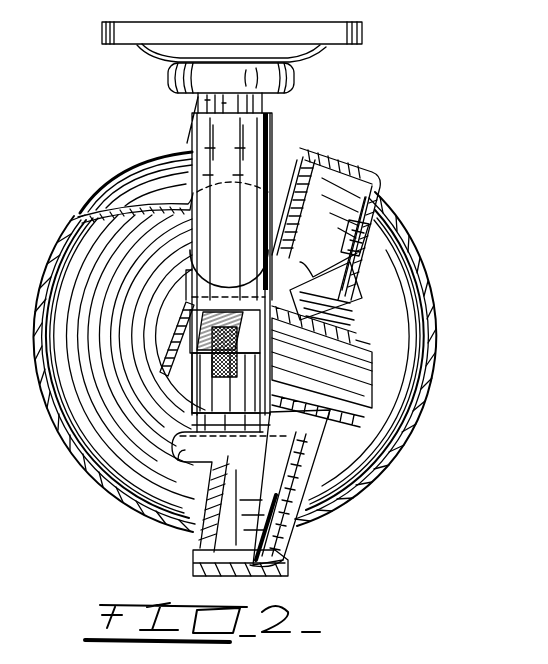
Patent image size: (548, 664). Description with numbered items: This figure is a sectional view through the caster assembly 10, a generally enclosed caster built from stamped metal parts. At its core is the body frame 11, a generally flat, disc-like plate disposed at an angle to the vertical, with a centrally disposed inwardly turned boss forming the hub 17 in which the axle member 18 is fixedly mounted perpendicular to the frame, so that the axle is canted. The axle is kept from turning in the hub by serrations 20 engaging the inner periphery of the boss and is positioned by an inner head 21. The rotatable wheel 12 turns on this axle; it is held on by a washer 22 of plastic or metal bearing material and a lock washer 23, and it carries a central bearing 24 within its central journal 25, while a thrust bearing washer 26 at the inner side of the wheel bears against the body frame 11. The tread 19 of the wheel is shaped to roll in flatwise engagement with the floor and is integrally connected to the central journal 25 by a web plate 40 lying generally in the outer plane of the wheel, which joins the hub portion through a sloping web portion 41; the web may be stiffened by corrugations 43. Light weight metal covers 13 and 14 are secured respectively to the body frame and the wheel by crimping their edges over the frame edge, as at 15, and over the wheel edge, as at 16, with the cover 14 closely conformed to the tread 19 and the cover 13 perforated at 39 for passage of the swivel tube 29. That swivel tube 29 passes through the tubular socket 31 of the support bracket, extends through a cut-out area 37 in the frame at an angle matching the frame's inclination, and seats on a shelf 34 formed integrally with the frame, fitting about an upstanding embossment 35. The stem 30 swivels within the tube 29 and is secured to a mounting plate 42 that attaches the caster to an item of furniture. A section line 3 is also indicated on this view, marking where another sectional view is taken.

The section line 3 is at (233, 104).
The caster assembly 10 is at (68, 467).
The body frame 11 is at (303, 228).
The rotatable wheel 12 is at (284, 544).
The cover 13 is at (33, 345).
The cover 14 is at (431, 340).
The crimped edge of the cover over the body frame 15 is at (340, 155).
The crimped edge of the cover over the wheel 16 is at (306, 142).
The hub 17 is at (200, 390).
The axle member 18 is at (370, 356).
The tread 19 is at (364, 172).
The serrations 20 is at (186, 313).
The inner head 21 is at (180, 358).
The washer 22 is at (303, 507).
The lock washer 23 is at (352, 326).
The central bearing 24 is at (364, 360).
The central journal 25 is at (342, 292).
The thrust bearing washer 26 is at (291, 263).
The swivel tube 29 is at (217, 162).
The stem 30 is at (262, 96).
The tubular socket 31 is at (190, 284).
The shelf 34 is at (250, 507).
The embossment 35 is at (196, 410).
The cut-out area 37 is at (267, 243).
The perforation 39 is at (188, 245).
The web plate 40 is at (313, 277).
The sloping web portion 41 is at (372, 240).
The mounting plate 42 is at (103, 33).
The corrugations 43 is at (273, 570).